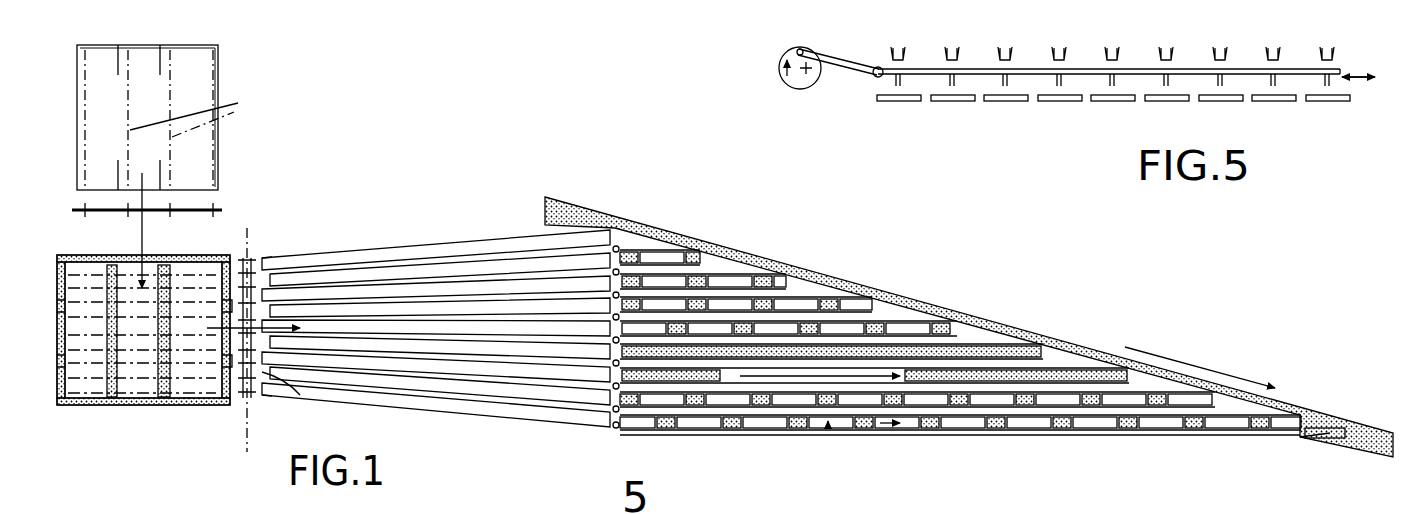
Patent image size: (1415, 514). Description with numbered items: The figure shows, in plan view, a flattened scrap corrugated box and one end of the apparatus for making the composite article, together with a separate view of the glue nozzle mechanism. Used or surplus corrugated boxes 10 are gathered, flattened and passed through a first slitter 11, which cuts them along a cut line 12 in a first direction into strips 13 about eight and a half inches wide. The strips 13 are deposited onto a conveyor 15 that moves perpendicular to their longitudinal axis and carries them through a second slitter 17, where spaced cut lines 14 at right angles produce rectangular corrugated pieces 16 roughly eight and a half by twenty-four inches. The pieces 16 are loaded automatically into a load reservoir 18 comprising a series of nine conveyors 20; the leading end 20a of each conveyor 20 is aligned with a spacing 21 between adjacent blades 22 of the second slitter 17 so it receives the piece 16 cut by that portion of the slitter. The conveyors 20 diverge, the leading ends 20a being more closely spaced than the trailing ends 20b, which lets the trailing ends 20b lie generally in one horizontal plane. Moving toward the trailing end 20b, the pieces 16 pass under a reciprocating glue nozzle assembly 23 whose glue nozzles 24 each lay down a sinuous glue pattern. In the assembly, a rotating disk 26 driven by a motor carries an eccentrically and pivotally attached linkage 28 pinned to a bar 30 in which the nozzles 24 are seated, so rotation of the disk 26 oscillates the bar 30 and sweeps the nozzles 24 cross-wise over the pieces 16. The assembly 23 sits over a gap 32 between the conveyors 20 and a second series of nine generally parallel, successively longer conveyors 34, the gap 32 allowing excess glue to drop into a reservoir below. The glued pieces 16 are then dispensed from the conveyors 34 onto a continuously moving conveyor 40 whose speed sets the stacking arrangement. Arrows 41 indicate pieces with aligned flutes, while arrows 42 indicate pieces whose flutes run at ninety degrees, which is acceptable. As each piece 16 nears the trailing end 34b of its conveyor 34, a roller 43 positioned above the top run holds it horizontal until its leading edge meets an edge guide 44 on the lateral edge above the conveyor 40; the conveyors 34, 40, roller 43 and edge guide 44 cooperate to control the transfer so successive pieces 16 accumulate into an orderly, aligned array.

In FIG. 1, the corrugated boxes 10 is at (247, 52).
In FIG. 1, the first slitter 11 is at (248, 198).
In FIG. 1, the cut line 12 is at (200, 114).
In FIG. 1, the strips 13 is at (105, 256).
In FIG. 1, the cut lines 14 is at (135, 385).
In FIG. 1, the conveyor 15 is at (168, 258).
In FIG. 1, the corrugated pieces 16 is at (673, 234).
In FIG. 5, the corrugated pieces 16 is at (915, 102).
In FIG. 1, the second slitter 17 is at (240, 414).
In FIG. 1, the load reservoir 18 is at (432, 216).
In FIG. 1, the conveyors 20 is at (463, 268).
In FIG. 1, the leading end 20a is at (268, 260).
In FIG. 1, the trailing end 20b is at (598, 414).
In FIG. 1, the spacing 21 is at (272, 395).
In FIG. 1, the blades 22 is at (257, 402).
In FIG. 1, the glue nozzle assembly 23 is at (603, 445).
In FIG. 5, the glue nozzle assembly 23 is at (1133, 60).
In FIG. 5, the glue nozzles 24 is at (1045, 88).
In FIG. 5, the rotating disk 26 is at (790, 90).
In FIG. 5, the linkage 28 is at (850, 60).
In FIG. 5, the bar 30 is at (975, 68).
In FIG. 1, the gap 32 is at (612, 432).
In FIG. 1, the conveyors 34 is at (800, 410).
In FIG. 1, the trailing end 34b is at (1110, 357).
In FIG. 1, the conveyor 40 is at (580, 204).
In FIG. 1, the arrows 41 is at (833, 433).
In FIG. 1, the arrows 42 is at (885, 432).
In FIG. 1, the roller 43 is at (700, 238).
In FIG. 1, the edge guide 44 is at (848, 292).